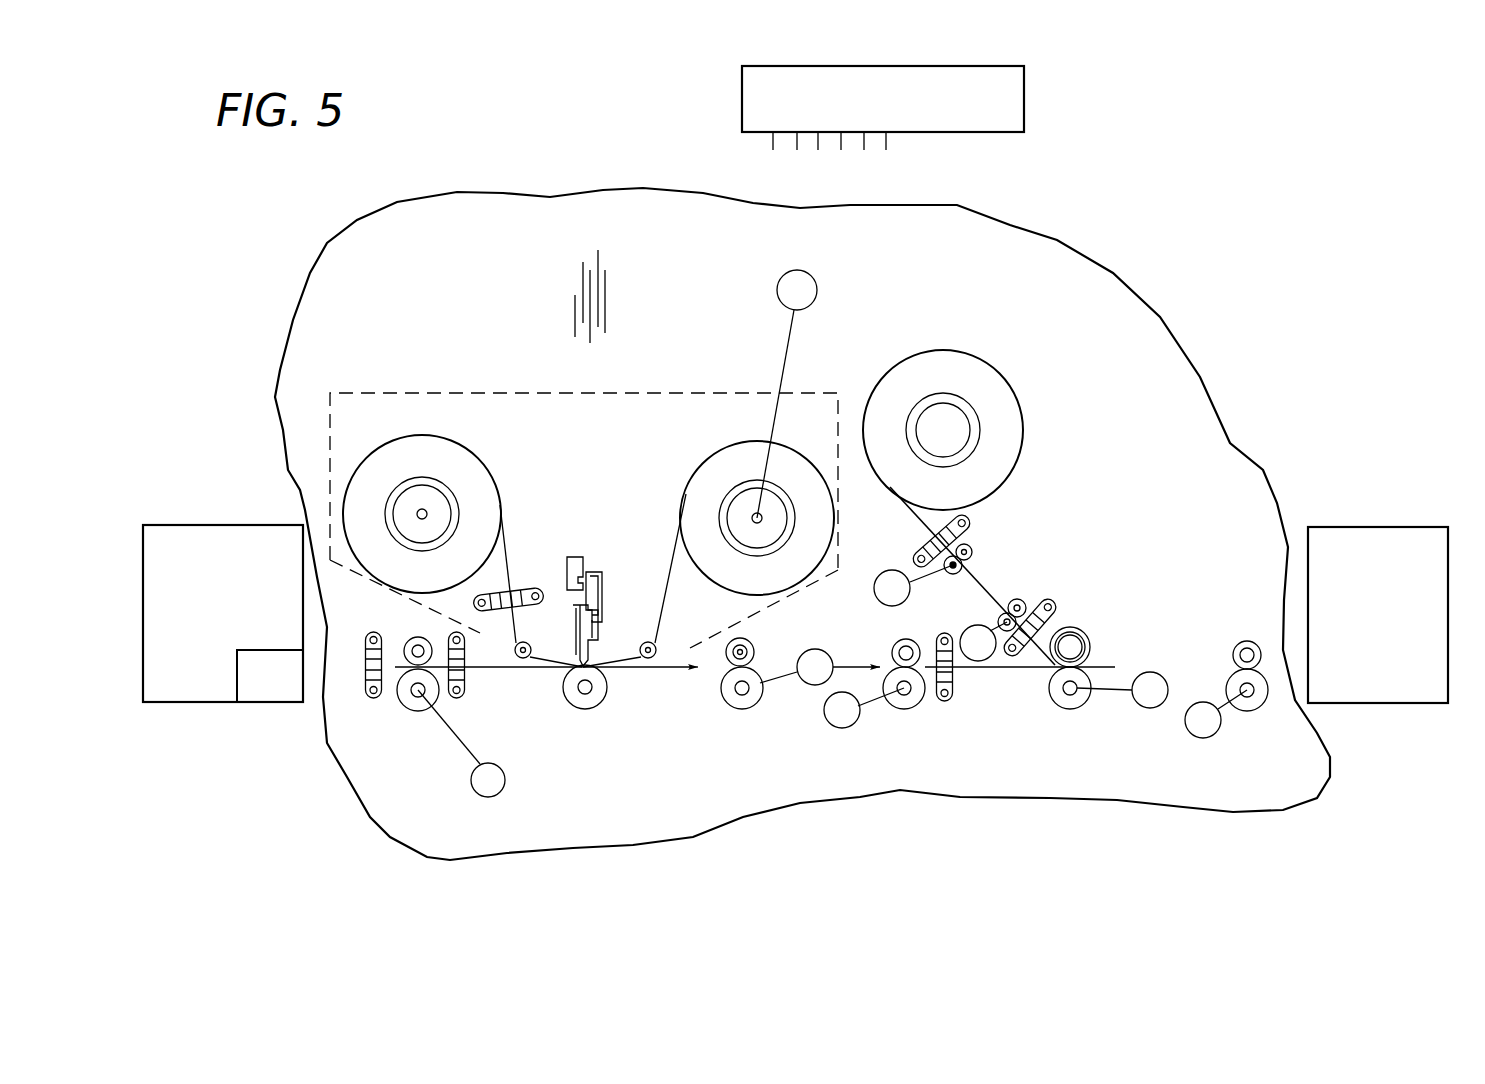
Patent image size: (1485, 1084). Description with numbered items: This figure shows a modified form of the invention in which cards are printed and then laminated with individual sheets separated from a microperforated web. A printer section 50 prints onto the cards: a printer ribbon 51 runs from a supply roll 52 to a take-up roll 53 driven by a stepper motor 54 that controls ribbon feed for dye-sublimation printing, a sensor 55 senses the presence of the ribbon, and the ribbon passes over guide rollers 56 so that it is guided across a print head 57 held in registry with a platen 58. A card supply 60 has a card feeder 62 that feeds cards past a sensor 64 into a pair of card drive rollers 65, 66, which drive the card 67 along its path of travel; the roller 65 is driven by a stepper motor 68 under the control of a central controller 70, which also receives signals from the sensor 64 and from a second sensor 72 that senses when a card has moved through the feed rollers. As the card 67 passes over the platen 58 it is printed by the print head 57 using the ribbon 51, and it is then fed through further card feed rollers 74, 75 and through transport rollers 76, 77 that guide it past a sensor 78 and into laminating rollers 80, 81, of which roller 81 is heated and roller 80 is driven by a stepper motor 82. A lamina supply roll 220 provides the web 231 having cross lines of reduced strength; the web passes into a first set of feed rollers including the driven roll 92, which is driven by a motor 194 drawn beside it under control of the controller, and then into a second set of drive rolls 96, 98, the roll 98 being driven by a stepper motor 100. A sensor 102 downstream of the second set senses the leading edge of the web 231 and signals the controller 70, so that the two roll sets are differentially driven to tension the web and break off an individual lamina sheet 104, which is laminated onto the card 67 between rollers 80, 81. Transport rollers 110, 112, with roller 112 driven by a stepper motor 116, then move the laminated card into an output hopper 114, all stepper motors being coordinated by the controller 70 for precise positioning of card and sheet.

The printer section 50 is at (425, 392).
The printer ribbon 51 is at (621, 673).
The supply roll 52 is at (405, 432).
The take-up roll 53 is at (725, 445).
The motor 54 is at (815, 282).
The sensor 55 is at (537, 590).
The guide rollers 56 is at (646, 640).
The print head 57 is at (578, 553).
The platen 58 is at (599, 710).
The card supply 60 is at (206, 648).
The card feeder 62 is at (285, 693).
The sensor 64 is at (374, 702).
The card drive roller 65 is at (418, 712).
The card drive roller 66 is at (405, 645).
The card 67 is at (497, 670).
The stepper motor 68 is at (505, 777).
The central controller 70 is at (1024, 92).
The second sensor 72 is at (467, 702).
The card feed roller 74 is at (755, 644).
The card feed roller 75 is at (753, 708).
The transport roller 76 is at (898, 710).
The transport roller 77 is at (890, 640).
The sensor 78 is at (946, 704).
The laminating roller 80 is at (1087, 706).
The laminating roller 81 is at (1093, 637).
The stepper motor 82 is at (1158, 708).
The driven roll 92 is at (948, 574).
The drive roll 96 is at (1026, 598).
The driven roll 98 is at (992, 618).
The stepper motor 100 is at (990, 661).
The sensor 102 is at (1060, 609).
The lamina sheet 104 is at (1001, 591).
The transport roller 110 is at (1244, 640).
The transport roller 112 is at (1253, 711).
The output hopper 114 is at (1381, 650).
The stepper motor 116 is at (1203, 702).
The drive motor 194 is at (875, 582).
The lamina supply roll 220 is at (975, 352).
The web 231 is at (915, 518).